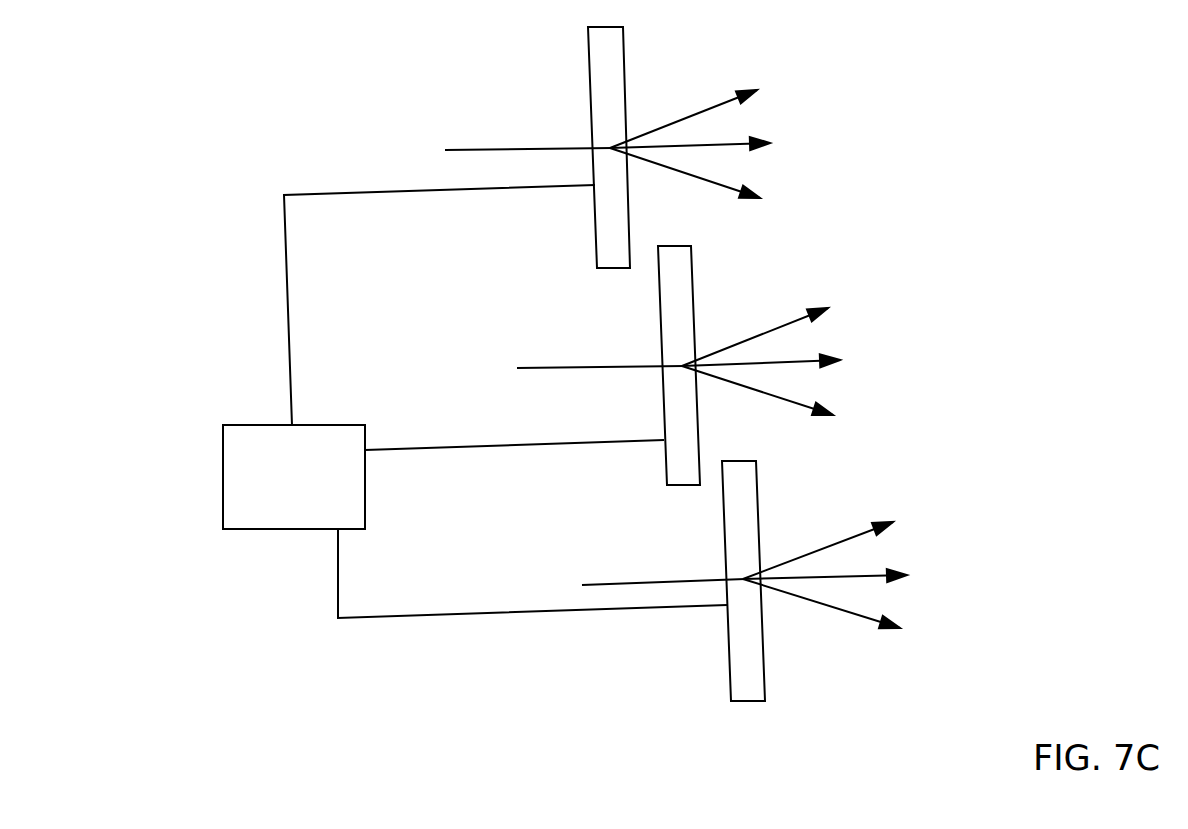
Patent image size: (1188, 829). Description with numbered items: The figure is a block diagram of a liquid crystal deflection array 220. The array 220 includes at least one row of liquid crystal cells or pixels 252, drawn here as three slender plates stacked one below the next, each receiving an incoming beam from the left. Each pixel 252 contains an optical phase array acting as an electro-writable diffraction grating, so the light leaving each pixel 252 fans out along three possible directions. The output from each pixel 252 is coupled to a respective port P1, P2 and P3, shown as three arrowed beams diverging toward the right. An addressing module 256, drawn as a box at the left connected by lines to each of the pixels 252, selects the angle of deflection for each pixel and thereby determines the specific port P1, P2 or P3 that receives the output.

The liquid crystal deflection array 220 is at (908, 160).
The liquid crystal cell 252 is at (623, 44).
The addressing module 256 is at (367, 497).
The port P1 is at (718, 98).
The port P2 is at (734, 140).
The port P3 is at (715, 183).